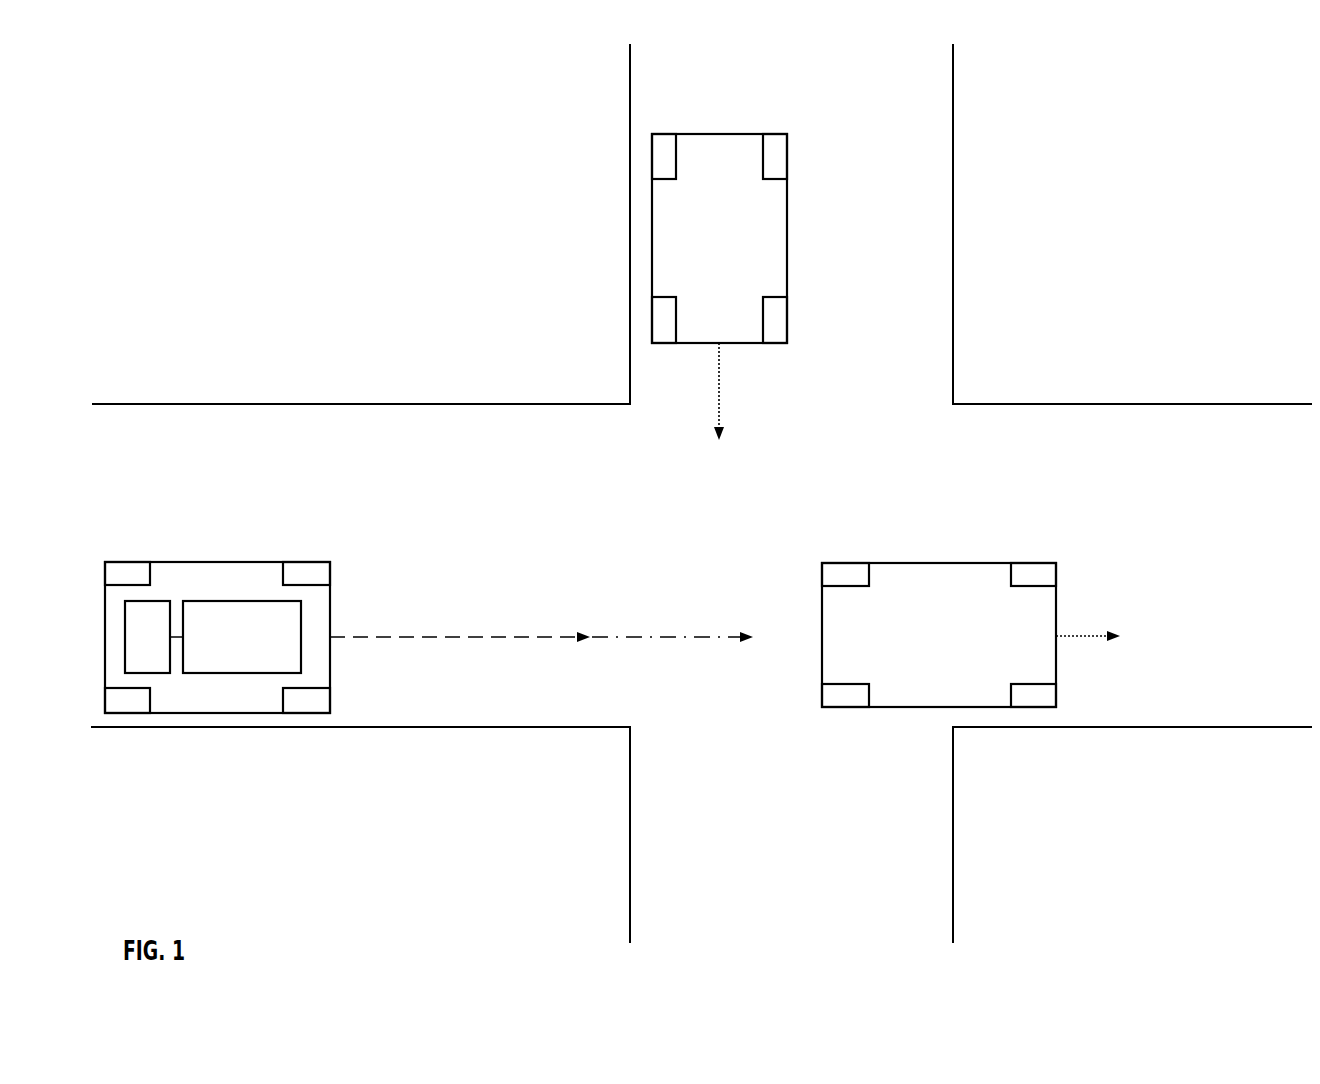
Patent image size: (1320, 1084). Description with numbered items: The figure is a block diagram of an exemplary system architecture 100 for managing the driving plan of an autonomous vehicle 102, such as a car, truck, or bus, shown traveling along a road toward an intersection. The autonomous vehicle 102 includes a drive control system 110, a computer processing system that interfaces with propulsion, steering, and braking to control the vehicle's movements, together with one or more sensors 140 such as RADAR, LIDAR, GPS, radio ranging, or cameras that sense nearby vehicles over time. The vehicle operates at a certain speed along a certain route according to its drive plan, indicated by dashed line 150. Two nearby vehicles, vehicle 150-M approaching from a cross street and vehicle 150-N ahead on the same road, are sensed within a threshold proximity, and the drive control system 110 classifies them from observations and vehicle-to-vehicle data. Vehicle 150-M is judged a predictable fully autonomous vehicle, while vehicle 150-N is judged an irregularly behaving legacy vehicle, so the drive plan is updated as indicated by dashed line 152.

The system architecture 100 is at (226, 144).
The autonomous vehicle 102 is at (246, 585).
The drive control system 110 is at (292, 670).
The sensors 140 is at (162, 648).
The dashed line 150 is at (473, 660).
The dashed line 152 is at (674, 660).
The vehicle 150-M is at (719, 287).
The vehicle 150-N is at (971, 635).